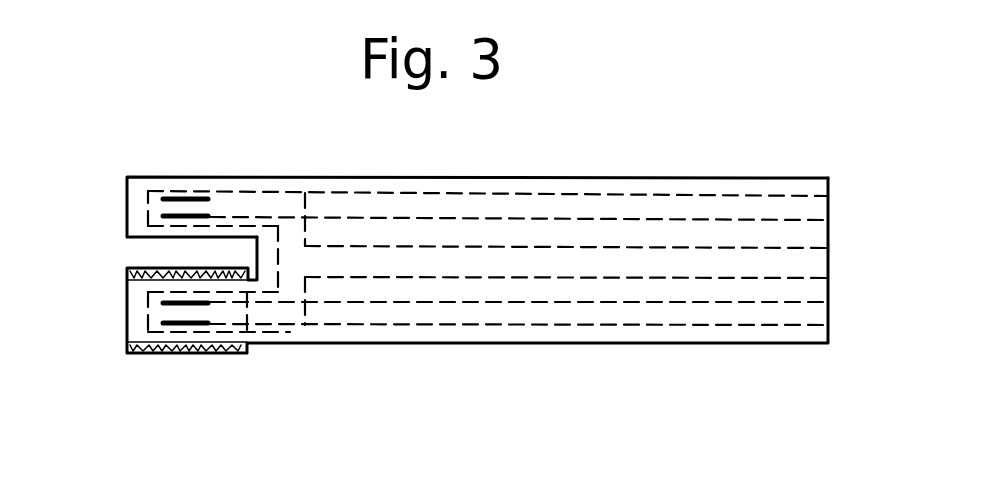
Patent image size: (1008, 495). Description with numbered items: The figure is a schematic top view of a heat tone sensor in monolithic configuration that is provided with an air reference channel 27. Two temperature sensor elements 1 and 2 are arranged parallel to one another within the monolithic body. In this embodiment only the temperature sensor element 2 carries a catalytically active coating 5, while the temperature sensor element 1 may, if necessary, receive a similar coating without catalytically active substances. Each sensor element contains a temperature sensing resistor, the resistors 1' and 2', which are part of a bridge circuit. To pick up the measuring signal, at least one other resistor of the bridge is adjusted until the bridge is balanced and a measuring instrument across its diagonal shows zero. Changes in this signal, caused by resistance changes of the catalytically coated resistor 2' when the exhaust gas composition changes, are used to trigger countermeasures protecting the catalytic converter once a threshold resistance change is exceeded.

The temperature sensor element 1 is at (443, 209).
The temperature sensing resistor 1' is at (189, 160).
The temperature sensor element 2 is at (448, 265).
The temperature sensing resistor 2' is at (200, 357).
The catalytically active coating 5 is at (142, 355).
The air reference channel 27 is at (807, 265).